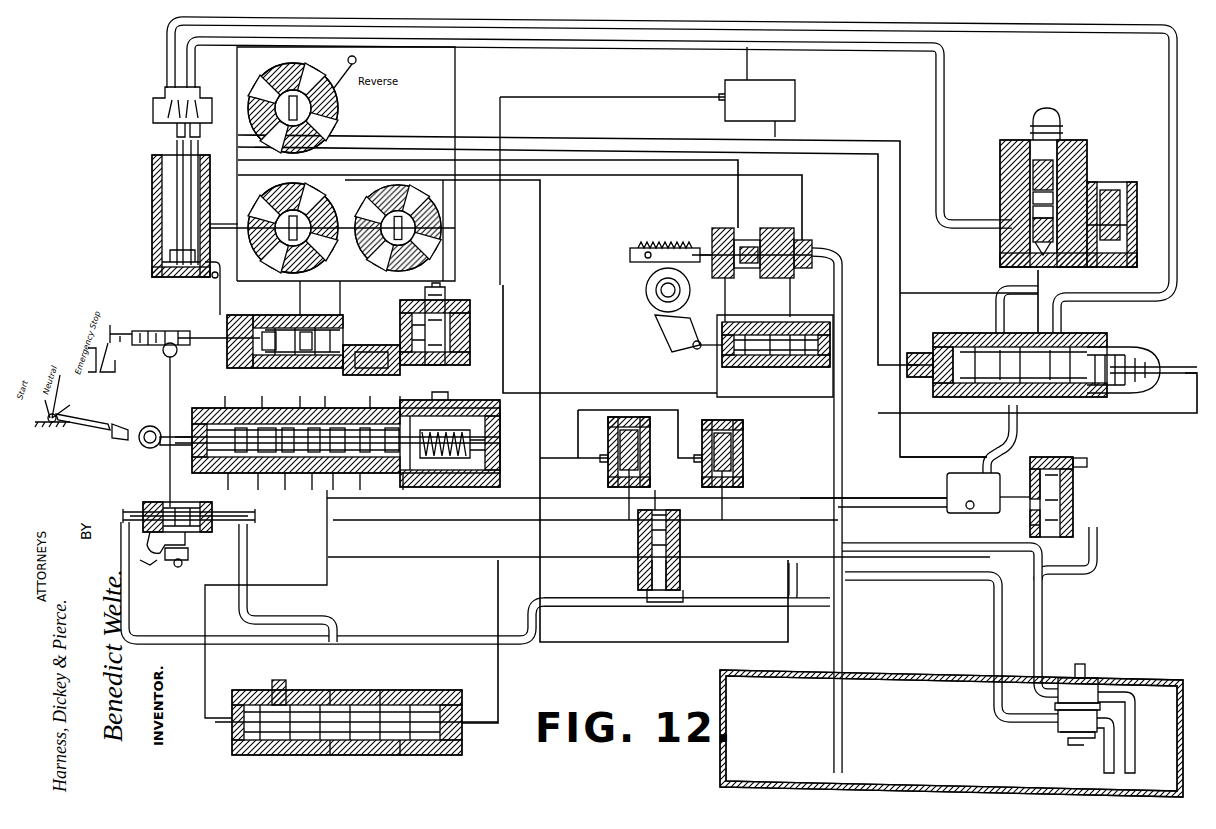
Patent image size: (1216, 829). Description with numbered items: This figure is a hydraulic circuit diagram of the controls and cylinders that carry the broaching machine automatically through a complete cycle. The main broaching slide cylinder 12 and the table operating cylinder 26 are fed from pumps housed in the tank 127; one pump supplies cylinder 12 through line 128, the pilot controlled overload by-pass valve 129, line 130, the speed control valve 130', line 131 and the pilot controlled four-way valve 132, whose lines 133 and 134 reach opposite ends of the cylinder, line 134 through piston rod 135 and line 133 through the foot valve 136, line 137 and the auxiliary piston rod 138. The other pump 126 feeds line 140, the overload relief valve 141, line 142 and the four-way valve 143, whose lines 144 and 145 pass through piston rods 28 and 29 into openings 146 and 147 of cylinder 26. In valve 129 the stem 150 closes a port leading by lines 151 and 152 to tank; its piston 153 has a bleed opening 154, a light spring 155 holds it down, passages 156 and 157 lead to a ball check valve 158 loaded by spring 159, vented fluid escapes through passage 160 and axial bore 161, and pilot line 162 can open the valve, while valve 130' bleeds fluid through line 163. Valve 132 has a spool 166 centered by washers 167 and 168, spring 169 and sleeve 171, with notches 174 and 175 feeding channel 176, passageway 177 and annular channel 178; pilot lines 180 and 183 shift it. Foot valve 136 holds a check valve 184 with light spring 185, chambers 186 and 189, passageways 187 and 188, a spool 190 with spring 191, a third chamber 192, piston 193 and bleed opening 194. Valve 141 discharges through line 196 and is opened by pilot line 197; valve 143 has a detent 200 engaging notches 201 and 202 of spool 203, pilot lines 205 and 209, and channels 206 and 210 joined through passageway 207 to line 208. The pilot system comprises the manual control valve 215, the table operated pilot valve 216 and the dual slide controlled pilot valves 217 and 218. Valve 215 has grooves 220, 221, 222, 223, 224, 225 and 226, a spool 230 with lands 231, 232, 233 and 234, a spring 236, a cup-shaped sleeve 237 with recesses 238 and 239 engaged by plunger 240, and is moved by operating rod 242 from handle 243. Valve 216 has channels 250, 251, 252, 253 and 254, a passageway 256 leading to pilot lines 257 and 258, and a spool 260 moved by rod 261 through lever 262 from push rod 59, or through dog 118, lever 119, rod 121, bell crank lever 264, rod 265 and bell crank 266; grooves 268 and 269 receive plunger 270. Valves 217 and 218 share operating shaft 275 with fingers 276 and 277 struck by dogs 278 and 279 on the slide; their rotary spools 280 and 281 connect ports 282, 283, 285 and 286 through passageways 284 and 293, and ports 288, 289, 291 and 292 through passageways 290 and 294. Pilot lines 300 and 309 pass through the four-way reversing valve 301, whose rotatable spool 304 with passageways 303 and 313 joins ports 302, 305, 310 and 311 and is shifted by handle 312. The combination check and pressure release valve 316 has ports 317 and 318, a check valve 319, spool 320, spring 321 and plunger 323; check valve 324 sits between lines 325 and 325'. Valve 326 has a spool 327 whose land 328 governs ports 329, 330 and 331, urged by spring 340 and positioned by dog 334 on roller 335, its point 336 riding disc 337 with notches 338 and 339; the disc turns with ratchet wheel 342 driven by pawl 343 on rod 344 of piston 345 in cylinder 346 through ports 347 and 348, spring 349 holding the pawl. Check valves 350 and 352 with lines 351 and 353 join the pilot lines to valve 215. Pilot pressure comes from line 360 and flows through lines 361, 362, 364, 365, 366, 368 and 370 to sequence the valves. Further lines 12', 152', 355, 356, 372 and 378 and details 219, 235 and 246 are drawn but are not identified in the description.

The cylinder 12 is at (166, 216).
The return pipe 12' is at (1065, 610).
The pump 26 is at (165, 502).
The bar 28 is at (226, 514).
The pump housing 29 is at (143, 504).
The stop bracket 59 is at (104, 362).
The lever 118 is at (185, 537).
The bracket 119 is at (163, 565).
The pivot 121 is at (175, 566).
The strainer 126 is at (1062, 740).
The tank 127 is at (758, 672).
The filter 128 is at (1082, 680).
The valve seat 129 is at (1075, 503).
The pipe 130 is at (1012, 524).
The relay box 130' is at (970, 506).
The pipe 131 is at (1020, 433).
The valve body part 132 is at (1082, 397).
The pipe 133 is at (1030, 495).
The pipe 134 is at (166, 70).
The piston rod 135 is at (175, 195).
The valve block 136 is at (1000, 240).
The pipe 137 is at (566, 47).
The connector 138 is at (198, 136).
The pipe 140 is at (900, 578).
The check valve 141 is at (683, 550).
The pipe 142 is at (432, 558).
The pump control valve 143 is at (283, 755).
The pipe 144 is at (335, 641).
The pipe 145 is at (498, 648).
The pump part 146 is at (215, 502).
The pump part 147 is at (210, 502).
The valve 150 is at (1075, 515).
The pipe 151 is at (998, 550).
The pipe 152 is at (845, 512).
The pipe 152' is at (936, 298).
The pipe 153 is at (998, 305).
The valve body 154 is at (1073, 490).
The valve part 155 is at (1030, 465).
The valve part 156 is at (1030, 483).
The valve part 157 is at (1052, 448).
The valve part 158 is at (1066, 454).
The adjusting screw 159 is at (1080, 462).
The spring 160 is at (1075, 476).
The valve part 161 is at (1076, 525).
The pipe 162 is at (912, 462).
The pipe 163 is at (920, 508).
The valve land 166 is at (1030, 397).
The spring housing 167 is at (1110, 347).
The spring 168 is at (1145, 347).
The spring seat 169 is at (1120, 393).
The stem 171 is at (1160, 362).
The pipe 174 is at (1038, 312).
The port 175 is at (1057, 333).
The port 176 is at (1058, 397).
The valve body 177 is at (1083, 322).
The port 178 is at (962, 397).
The pipe 180 is at (572, 150).
The pipe 183 is at (524, 136).
The valve block 184 is at (1127, 182).
The port 185 is at (1106, 182).
The port 186 is at (1000, 258).
The port 187 is at (1090, 268).
The valve 188 is at (1066, 214).
The pipe 189 is at (1045, 274).
The valve 190 is at (1025, 208).
The valve part 191 is at (1025, 194).
The spring 192 is at (1025, 172).
The valve part 193 is at (1025, 182).
The cap 194 is at (1060, 150).
The pipe 196 is at (745, 604).
The pipe 197 is at (592, 521).
The spring 200 is at (268, 692).
The valve land 201 is at (270, 757).
The valve body 202 is at (240, 757).
The valve land 203 is at (328, 757).
The pipe 205 is at (488, 725).
The valve land 206 is at (298, 757).
The port 207 is at (370, 757).
The pipe 208 is at (498, 760).
The pipe 209 is at (320, 556).
The port 210 is at (415, 757).
The control valve 215 is at (250, 330).
The valve body 216 is at (234, 318).
The port 217 is at (262, 281).
The port 218 is at (376, 281).
The port 219 is at (205, 497).
The port 220 is at (245, 495).
The port 221 is at (272, 495).
The port 222 is at (299, 495).
The port 223 is at (322, 495).
The port 224 is at (350, 495).
The port 225 is at (378, 495).
The port 226 is at (415, 495).
The valve land 230 is at (310, 405).
The valve spool 231 is at (337, 443).
The valve land 232 is at (272, 405).
The valve land 233 is at (330, 405).
The valve land 234 is at (380, 405).
The valve land 235 is at (442, 405).
The valve land 236 is at (410, 405).
The spring seat 237 is at (483, 488).
The spring seat 238 is at (460, 485).
The port 239 is at (450, 495).
The spring 240 is at (455, 420).
The link 242 is at (98, 420).
The hand lever 243 is at (52, 412).
The valve part 246 is at (260, 302).
The valve land 250 is at (245, 368).
The valve land 251 is at (262, 368).
The valve land 252 is at (300, 368).
The valve land 253 is at (322, 368).
The valve land 254 is at (345, 375).
The port 256 is at (310, 307).
The port 257 is at (298, 298).
The pipe 258 is at (542, 315).
The valve stem 260 is at (222, 350).
The valve 261 is at (228, 326).
The lever 262 is at (116, 345).
The lever 264 is at (188, 556).
The link 265 is at (170, 375).
The lever 266 is at (162, 330).
The valve part 268 is at (355, 362).
The valve part 269 is at (343, 332).
The valve part 270 is at (340, 322).
The port 275 is at (220, 222).
The cylinder head 276 is at (152, 242).
The port 277 is at (212, 277).
The port 278 is at (185, 277).
The pipe 279 is at (198, 150).
The port 280 is at (292, 272).
The port 281 is at (418, 260).
The rotary valve 282 is at (291, 222).
The port 283 is at (312, 258).
The port 284 is at (282, 195).
The port 285 is at (270, 260).
The port 286 is at (306, 195).
The port 288 is at (360, 184).
The port 289 is at (395, 297).
The rotary valve 290 is at (442, 212).
The port 291 is at (376, 258).
The port 292 is at (400, 195).
The port 293 is at (318, 200).
The port 294 is at (390, 195).
The rotary valve 300 is at (240, 82).
The port 301 is at (334, 120).
The port 302 is at (314, 88).
The port 303 is at (336, 99).
The port 304 is at (336, 110).
The port 305 is at (330, 130).
The valve housing 309 is at (457, 82).
The port 310 is at (278, 90).
The port 311 is at (250, 96).
The handle 312 is at (352, 60).
The pipe 313 is at (255, 152).
The valve part 316 is at (375, 362).
The valve part 317 is at (452, 324).
The valve part 318 is at (472, 366).
The valve part 319 is at (400, 340).
The valve part 320 is at (450, 310).
The valve 321 is at (450, 292).
The pipe 323 is at (503, 315).
The pipe 324 is at (778, 126).
The pipe 325 is at (612, 90).
The governor 325' is at (761, 84).
The valve body 326 is at (748, 370).
The valve part 327 is at (768, 370).
The valve part 328 is at (778, 322).
The valve part 329 is at (792, 322).
The valve part 330 is at (806, 322).
The valve part 331 is at (800, 370).
The lever 334 is at (670, 345).
The pin 335 is at (697, 352).
The link 336 is at (688, 305).
The gear part 337 is at (648, 296).
The gear part 338 is at (652, 306).
The gear part 339 is at (658, 316).
The valve part 340 is at (816, 322).
The gear part 342 is at (646, 286).
The gear 343 is at (650, 278).
The servo cylinder 344 is at (728, 228).
The piston 345 is at (776, 240).
The cylinder head 346 is at (812, 240).
The cylinder head 347 is at (722, 228).
The port 348 is at (802, 222).
The rack 349 is at (664, 240).
The valve 350 is at (748, 453).
The pipe 351 is at (580, 412).
The valve 352 is at (648, 470).
The pipe 353 is at (583, 458).
The pipe 355 is at (335, 507).
The pipe 356 is at (360, 507).
The pipe 360 is at (537, 470).
The pipe 361 is at (553, 162).
The pipe 362 is at (472, 282).
The pipe 364 is at (505, 376).
The pipe 365 is at (380, 387).
The pipe 366 is at (566, 394).
The pipe 368 is at (590, 506).
The pipe 370 is at (362, 297).
The pipe 372 is at (598, 176).
The pipe 378 is at (360, 387).